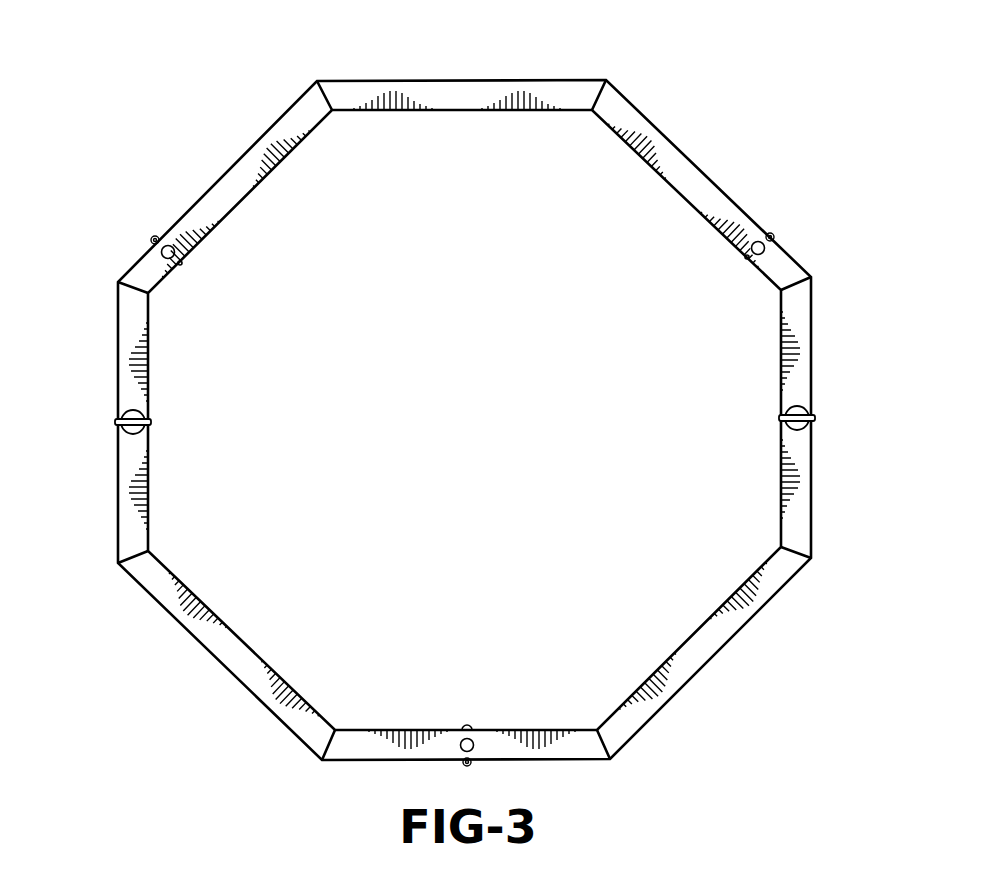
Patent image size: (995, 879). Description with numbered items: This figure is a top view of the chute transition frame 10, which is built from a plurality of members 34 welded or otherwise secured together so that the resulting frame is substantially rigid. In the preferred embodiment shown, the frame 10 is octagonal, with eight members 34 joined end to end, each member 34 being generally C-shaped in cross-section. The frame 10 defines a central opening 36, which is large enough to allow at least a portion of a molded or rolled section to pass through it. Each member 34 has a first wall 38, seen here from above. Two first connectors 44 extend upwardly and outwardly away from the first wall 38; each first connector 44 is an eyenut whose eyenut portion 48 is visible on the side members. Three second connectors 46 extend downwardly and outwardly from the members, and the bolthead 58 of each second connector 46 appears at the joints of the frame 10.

The chute transition frame 10 is at (463, 418).
The member 34 is at (488, 78).
The central opening 36 is at (200, 460).
The first wall 38 is at (432, 88).
The first connector 44 is at (112, 422).
The second connector 46 is at (168, 260).
The eyenut portion 48 is at (151, 422).
The bolthead 58 is at (153, 242).